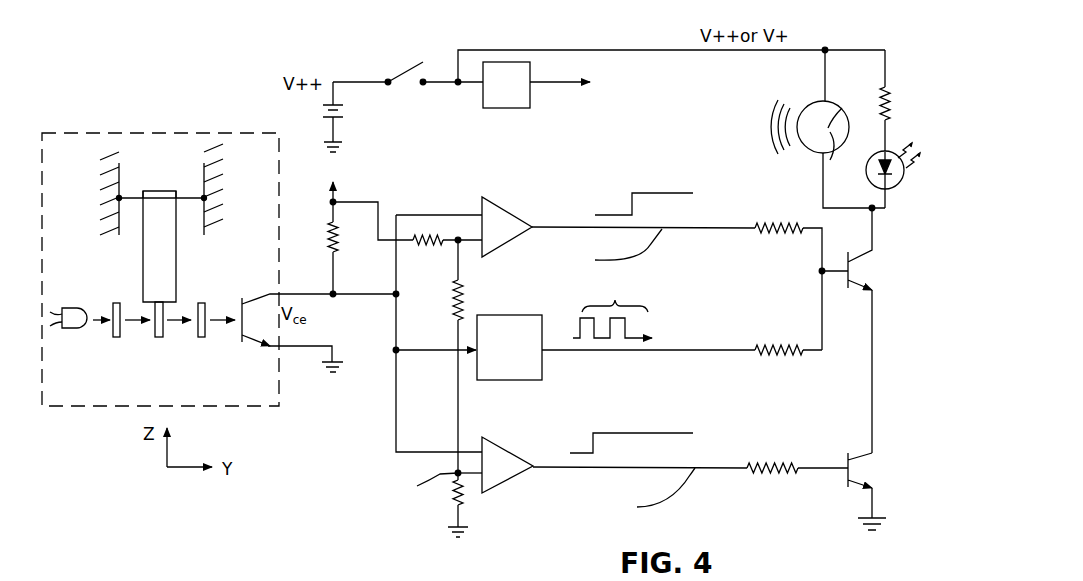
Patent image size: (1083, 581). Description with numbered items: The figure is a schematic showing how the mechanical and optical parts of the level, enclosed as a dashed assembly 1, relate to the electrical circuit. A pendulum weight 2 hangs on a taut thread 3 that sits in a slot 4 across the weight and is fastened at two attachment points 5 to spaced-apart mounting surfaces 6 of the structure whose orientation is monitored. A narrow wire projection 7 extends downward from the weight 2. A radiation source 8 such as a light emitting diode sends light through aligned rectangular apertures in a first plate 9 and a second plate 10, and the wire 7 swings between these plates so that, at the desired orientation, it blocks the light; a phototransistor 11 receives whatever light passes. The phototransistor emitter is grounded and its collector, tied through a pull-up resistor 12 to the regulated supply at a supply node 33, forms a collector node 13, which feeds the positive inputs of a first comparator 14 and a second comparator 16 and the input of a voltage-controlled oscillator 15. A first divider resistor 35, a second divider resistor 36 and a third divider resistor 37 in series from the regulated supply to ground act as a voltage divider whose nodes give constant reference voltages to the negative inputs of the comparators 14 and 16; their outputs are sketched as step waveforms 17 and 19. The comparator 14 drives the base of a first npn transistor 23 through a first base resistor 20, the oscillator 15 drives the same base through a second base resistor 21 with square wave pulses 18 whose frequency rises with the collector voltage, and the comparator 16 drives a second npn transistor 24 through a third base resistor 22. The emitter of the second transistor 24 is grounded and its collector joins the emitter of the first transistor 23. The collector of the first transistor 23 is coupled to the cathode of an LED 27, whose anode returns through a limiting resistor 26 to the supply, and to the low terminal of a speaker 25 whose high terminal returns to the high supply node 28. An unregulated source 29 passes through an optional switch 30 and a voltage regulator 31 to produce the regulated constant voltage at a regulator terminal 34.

The sensor assembly 1 is at (212, 408).
The pendulum weight 2 is at (160, 265).
The thread 3 is at (187, 198).
The slot 4 is at (155, 198).
The attachment points 5 is at (119, 198).
The mounting bracket 6 is at (204, 163).
The wire projection 7 is at (155, 330).
The radiation source 8 is at (76, 308).
The first plate 9 is at (116, 330).
The second plate 10 is at (201, 330).
The phototransistor 11 is at (238, 334).
The resistor R12 12 is at (310, 248).
The node N13 13 is at (335, 300).
The first comparator 14 is at (520, 222).
The voltage-controlled oscillator 15 is at (536, 371).
The second comparator 16 is at (517, 468).
The output waveform of comparator 14 17 is at (640, 189).
The square wave pulses 18 is at (612, 302).
The output waveform of comparator 16 19 is at (654, 426).
The resistor R20 20 is at (788, 286).
The resistor R21 21 is at (788, 365).
The resistor R22 22 is at (797, 486).
The transistor Q23 23 is at (869, 330).
The transistor Q24 24 is at (884, 491).
The speaker 25 is at (828, 110).
The resistor R26 26 is at (904, 100).
The LED 27 is at (893, 190).
The supply node 28 is at (820, 54).
The battery 29 is at (350, 112).
The switch SW30 30 is at (400, 72).
The voltage regulator 31 is at (500, 88).
The node N33 33 is at (325, 206).
The regulator terminal 34 is at (573, 80).
The resistor R35 35 is at (447, 216).
The resistor R36 36 is at (476, 356).
The resistor R37 37 is at (475, 515).